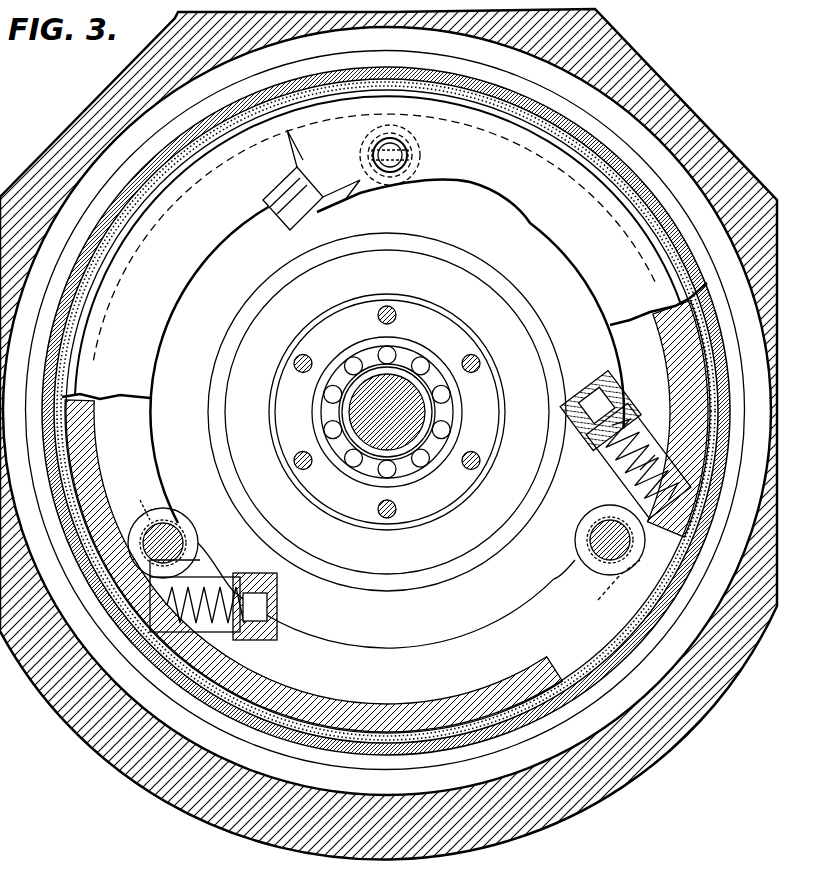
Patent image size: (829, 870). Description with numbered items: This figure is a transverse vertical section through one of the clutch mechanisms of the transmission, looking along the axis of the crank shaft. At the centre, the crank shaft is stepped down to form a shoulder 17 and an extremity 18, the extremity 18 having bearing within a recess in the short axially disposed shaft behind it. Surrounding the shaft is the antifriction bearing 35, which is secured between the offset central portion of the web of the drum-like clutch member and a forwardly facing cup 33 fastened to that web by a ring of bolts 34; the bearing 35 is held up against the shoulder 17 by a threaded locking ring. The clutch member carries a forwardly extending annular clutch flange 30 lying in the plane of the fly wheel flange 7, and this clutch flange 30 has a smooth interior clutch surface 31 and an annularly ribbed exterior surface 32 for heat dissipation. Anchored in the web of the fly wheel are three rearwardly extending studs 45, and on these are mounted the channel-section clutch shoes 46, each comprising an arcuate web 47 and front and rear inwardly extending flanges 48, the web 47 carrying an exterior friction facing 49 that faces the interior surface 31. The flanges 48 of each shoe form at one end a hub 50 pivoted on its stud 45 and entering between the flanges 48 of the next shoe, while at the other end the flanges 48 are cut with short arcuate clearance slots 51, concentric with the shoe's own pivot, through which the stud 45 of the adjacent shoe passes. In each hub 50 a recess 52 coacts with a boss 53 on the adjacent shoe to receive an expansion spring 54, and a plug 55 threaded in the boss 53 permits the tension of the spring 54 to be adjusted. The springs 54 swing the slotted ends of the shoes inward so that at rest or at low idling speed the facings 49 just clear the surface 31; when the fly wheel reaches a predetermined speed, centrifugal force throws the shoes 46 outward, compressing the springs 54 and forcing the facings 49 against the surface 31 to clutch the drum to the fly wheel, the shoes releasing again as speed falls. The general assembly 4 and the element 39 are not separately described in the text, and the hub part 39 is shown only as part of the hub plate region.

The brake assembly 4 is at (51, 98).
The annular flange 7 is at (122, 73).
The shoulder 17 is at (368, 458).
The shaft extremity 18 is at (416, 418).
The clutch flange 30 is at (477, 712).
The interior clutch surface 31 is at (348, 725).
The annularly ribbed exterior surface 32 is at (262, 80).
The cup 33 is at (478, 522).
The bolts 34 is at (468, 354).
The antifriction bearing 35 is at (398, 350).
The hub plate 39 is at (384, 592).
The studs 45 is at (408, 158).
The clutch shoes 46 is at (507, 218).
The arcuate web 47 is at (480, 130).
The flanges 48 is at (135, 395).
The friction facing 49 is at (180, 143).
The hub 50 is at (182, 512).
The arcuate clearance slots 51 is at (372, 178).
The recess 52 is at (226, 640).
The boss 53 is at (268, 580).
The spring 54 is at (240, 600).
The plug 55 is at (270, 610).